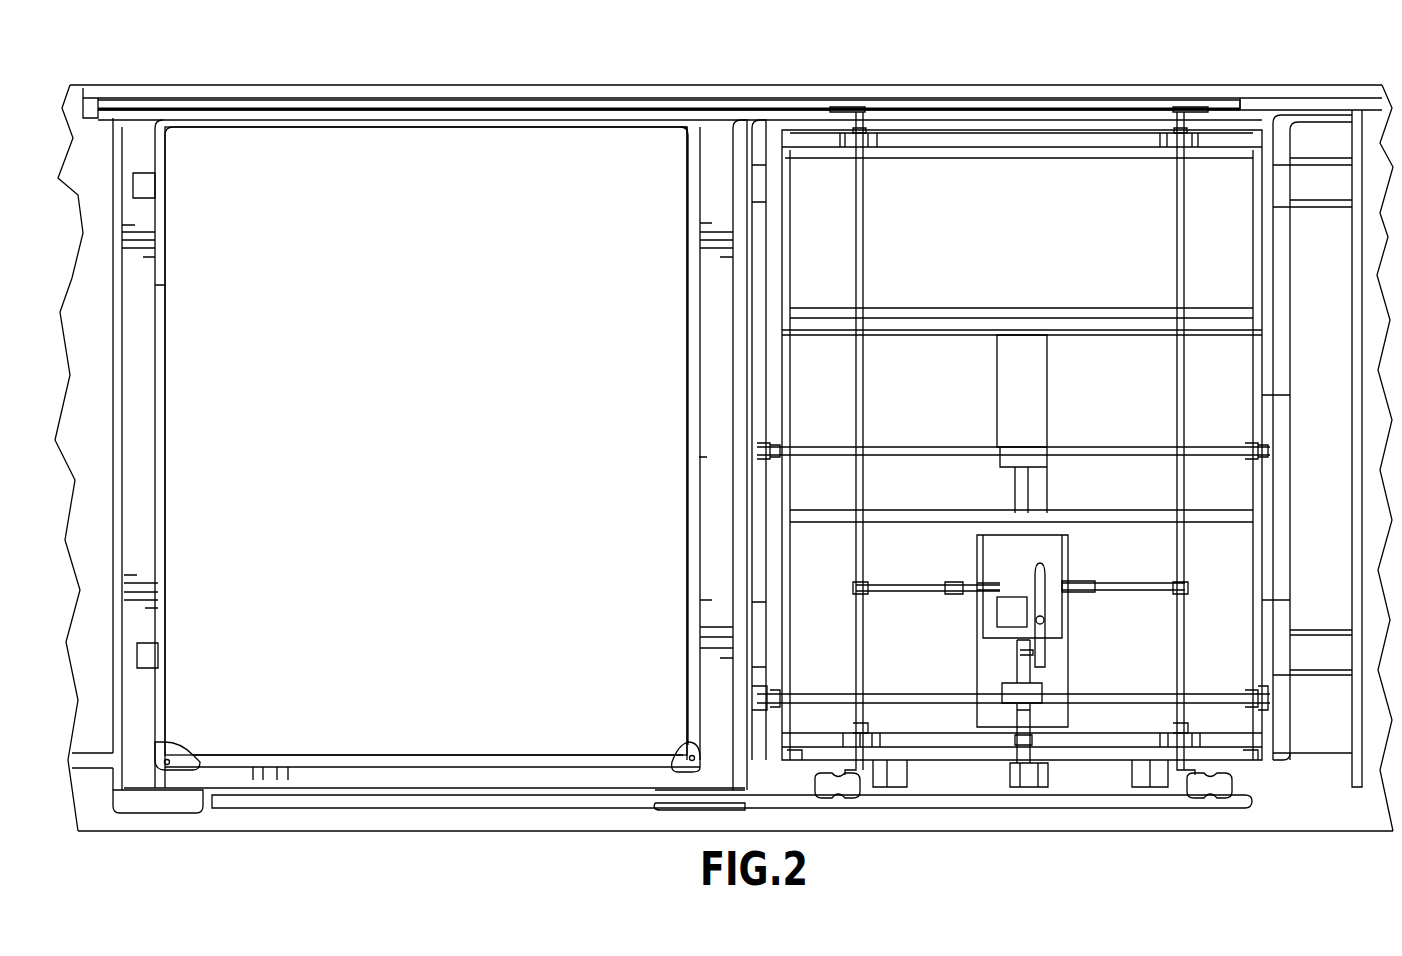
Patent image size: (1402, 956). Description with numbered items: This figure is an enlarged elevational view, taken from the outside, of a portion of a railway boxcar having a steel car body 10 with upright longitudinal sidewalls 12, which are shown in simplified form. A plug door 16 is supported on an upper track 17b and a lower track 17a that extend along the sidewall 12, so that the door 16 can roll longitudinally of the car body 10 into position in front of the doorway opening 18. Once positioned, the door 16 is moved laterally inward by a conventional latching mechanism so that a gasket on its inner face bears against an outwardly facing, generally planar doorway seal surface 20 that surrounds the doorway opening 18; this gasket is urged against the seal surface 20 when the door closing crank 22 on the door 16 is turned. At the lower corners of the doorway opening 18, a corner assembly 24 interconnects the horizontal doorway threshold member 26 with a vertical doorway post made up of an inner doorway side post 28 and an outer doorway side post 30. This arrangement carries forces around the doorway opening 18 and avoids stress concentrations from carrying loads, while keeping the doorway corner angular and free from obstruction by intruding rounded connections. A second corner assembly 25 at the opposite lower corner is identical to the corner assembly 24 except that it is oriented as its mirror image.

The car body 10 is at (898, 82).
The sidewall 12 is at (85, 128).
The plug door 16 is at (1035, 254).
The track 17a is at (988, 800).
The track 17b is at (1223, 100).
The doorway opening 18 is at (325, 148).
The doorway seal surface 20 is at (690, 547).
The door closing crank 22 is at (1043, 600).
The corner assembly 24 is at (689, 746).
The corner assembly 25 is at (170, 752).
The doorway threshold member 26 is at (463, 757).
The inner doorway side post 28 is at (687, 388).
The outer doorway side post 30 is at (157, 287).